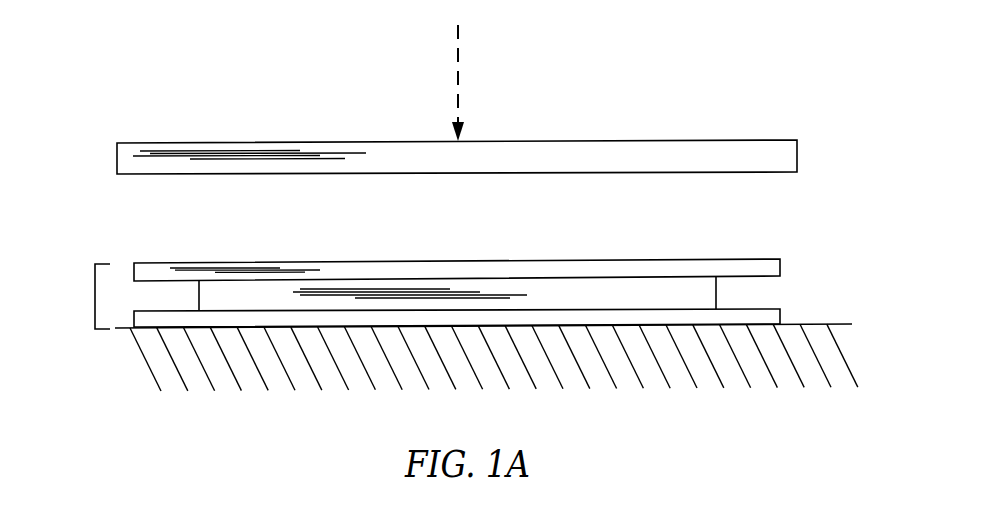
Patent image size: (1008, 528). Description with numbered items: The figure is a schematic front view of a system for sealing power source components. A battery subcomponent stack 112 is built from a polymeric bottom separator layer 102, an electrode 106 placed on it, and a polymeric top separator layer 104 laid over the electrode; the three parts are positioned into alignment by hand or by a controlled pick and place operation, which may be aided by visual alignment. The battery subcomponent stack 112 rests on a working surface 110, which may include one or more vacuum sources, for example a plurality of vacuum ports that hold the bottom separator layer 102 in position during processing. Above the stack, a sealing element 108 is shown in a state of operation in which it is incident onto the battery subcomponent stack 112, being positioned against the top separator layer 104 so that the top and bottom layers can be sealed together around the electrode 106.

The bottom separator layer 102 is at (747, 309).
The top separator layer 104 is at (588, 260).
The electrode 106 is at (684, 277).
The sealing element 108 is at (747, 134).
The working surface 110 is at (795, 324).
The battery subcomponent stack 112 is at (95, 297).